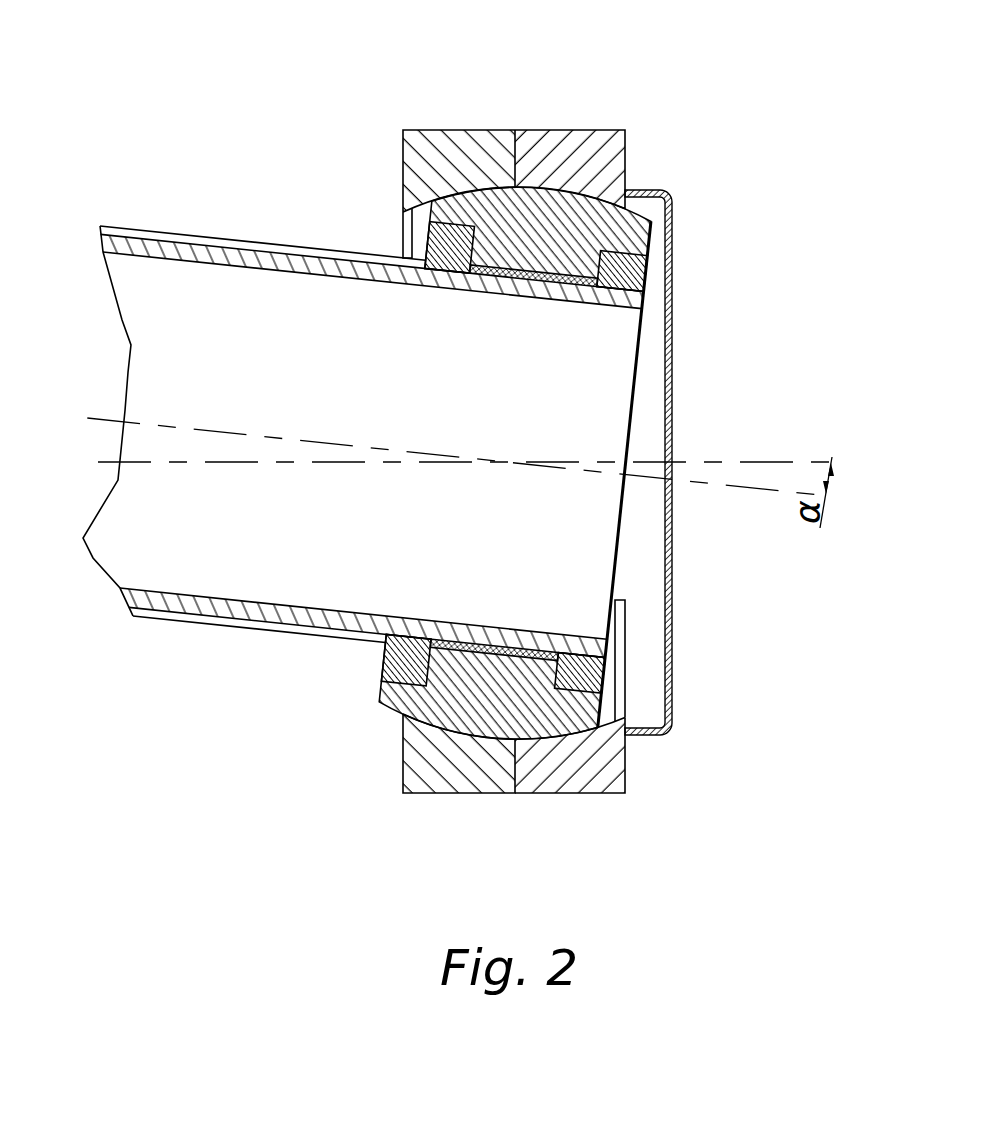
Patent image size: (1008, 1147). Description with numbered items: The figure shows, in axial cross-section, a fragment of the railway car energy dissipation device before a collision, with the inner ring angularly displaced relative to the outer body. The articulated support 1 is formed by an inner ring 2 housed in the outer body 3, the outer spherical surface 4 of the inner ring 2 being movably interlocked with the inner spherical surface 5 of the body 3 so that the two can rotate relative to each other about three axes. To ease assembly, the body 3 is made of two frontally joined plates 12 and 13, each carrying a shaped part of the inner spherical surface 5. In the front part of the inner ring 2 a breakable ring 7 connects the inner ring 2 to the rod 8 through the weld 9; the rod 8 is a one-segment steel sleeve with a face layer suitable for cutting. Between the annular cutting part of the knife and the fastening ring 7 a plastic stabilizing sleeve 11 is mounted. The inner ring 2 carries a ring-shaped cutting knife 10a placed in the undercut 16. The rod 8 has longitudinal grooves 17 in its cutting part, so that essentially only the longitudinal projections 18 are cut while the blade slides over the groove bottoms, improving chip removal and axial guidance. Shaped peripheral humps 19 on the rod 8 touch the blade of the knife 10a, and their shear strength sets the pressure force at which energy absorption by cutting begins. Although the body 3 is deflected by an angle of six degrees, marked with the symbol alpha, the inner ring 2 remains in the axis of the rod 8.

The articulated support 1 is at (530, 427).
The inner ring 2 is at (595, 217).
The outer body 3 is at (519, 128).
The outer spherical surface 4 is at (445, 736).
The inner spherical surface 5 is at (487, 727).
The breakable ring 7 is at (580, 674).
The rod 8 is at (345, 350).
The weld 9 is at (643, 291).
The cutting knife 10a is at (452, 250).
The plastic stabilizing sleeve 11 is at (484, 732).
The plate 12 is at (455, 765).
The plate 13 is at (560, 765).
The undercut 16 is at (469, 241).
The longitudinal grooves 17 is at (242, 626).
The longitudinal projections 18 is at (312, 632).
The peripheral humps 19 is at (373, 648).